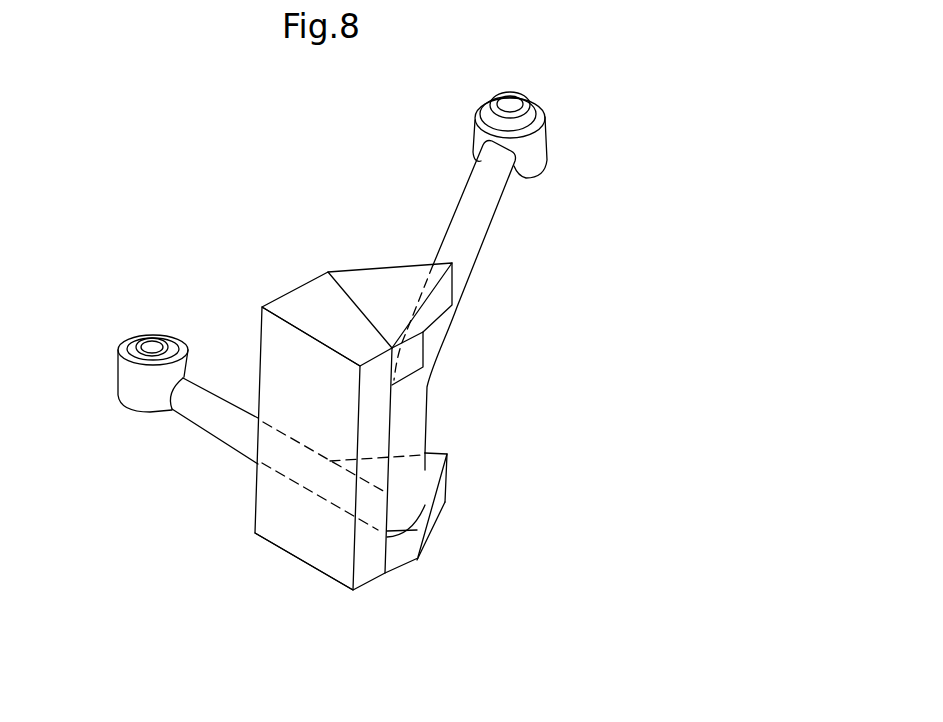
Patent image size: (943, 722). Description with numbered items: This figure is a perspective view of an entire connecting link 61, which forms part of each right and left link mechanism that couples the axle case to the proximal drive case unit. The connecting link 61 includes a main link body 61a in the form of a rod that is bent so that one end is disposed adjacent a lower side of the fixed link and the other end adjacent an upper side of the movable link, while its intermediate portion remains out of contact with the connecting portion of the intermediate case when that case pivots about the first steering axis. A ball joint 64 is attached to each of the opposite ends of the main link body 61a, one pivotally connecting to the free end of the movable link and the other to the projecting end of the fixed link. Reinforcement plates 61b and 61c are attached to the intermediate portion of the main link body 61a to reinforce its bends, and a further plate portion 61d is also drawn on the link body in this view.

The connecting link 61 is at (373, 389).
The main link body 61a is at (225, 422).
The reinforcement plate 61b is at (357, 287).
The reinforcement plate 61c is at (317, 543).
The plate portion 61d is at (437, 508).
The ball joint 64 is at (548, 128).